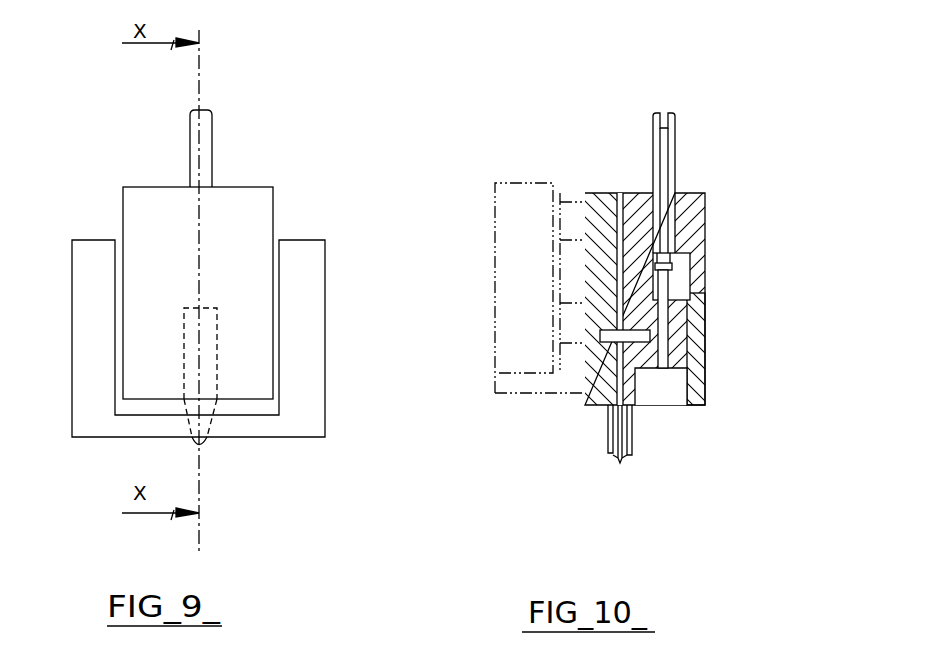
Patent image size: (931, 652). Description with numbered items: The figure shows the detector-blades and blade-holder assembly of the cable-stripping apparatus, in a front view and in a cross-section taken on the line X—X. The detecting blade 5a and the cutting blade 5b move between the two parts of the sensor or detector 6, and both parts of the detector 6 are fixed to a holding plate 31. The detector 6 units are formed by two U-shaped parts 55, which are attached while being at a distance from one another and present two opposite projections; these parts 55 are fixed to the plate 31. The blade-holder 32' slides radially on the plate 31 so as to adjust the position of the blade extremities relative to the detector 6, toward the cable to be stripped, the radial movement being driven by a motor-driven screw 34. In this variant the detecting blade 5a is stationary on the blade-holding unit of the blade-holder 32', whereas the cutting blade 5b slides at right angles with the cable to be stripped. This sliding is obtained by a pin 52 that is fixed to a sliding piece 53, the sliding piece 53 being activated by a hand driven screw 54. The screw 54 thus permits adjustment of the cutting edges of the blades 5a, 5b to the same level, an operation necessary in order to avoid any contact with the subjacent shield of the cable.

In FIG. 9, the hand driven screw 54 is at (210, 137).
In FIG. 9, the blade-holder 32' is at (260, 281).
In FIG. 10, the blade-holder 32' is at (707, 286).
In FIG. 9, the U-shaped parts 55 is at (310, 273).
In FIG. 10, the U-shaped parts 55 is at (608, 410).
In FIG. 9, the detecting blade 5a is at (205, 405).
In FIG. 10, the detecting blade 5a is at (622, 298).
In FIG. 9, the cutting blade 5b is at (303, 372).
In FIG. 10, the cutting blade 5b is at (672, 280).
In FIG. 9, the detector 6 is at (207, 444).
In FIG. 10, the detector 6 is at (603, 453).
In FIG. 10, the holding plate 31 is at (535, 172).
In FIG. 10, the motor-driven screw 34 is at (665, 138).
In FIG. 10, the pin 52 is at (612, 333).
In FIG. 10, the sliding piece 53 is at (690, 340).